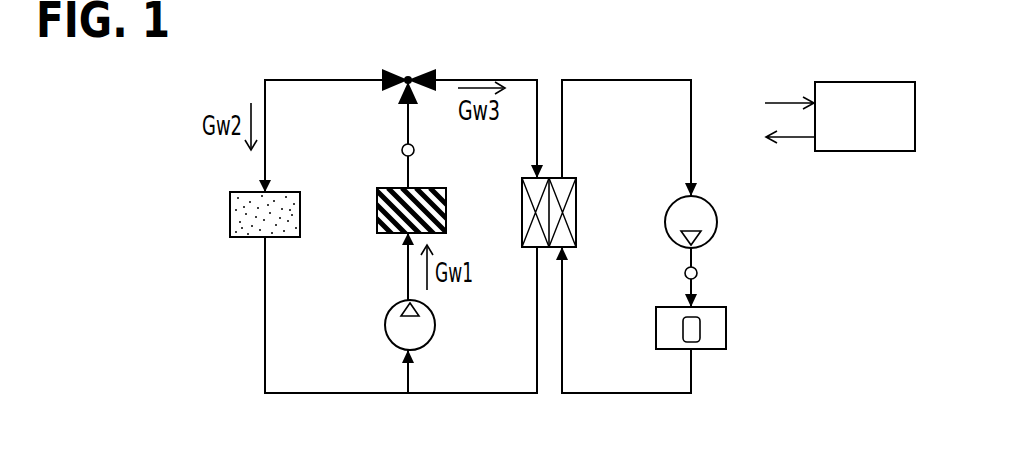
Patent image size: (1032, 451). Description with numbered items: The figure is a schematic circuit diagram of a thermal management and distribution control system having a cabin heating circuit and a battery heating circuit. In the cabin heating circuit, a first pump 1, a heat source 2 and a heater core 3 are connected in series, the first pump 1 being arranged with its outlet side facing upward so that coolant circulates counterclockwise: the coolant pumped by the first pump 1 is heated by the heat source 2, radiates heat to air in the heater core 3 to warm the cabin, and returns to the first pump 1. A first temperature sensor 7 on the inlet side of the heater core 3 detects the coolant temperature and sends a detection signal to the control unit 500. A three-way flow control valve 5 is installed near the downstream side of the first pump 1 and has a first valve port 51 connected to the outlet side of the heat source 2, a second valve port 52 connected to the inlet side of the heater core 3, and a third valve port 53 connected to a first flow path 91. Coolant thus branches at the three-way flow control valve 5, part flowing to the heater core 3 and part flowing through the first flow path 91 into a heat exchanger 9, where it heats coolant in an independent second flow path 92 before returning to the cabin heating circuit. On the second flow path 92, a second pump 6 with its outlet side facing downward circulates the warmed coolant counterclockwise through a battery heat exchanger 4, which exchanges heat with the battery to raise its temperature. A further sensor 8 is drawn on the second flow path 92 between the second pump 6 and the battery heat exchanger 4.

The first pump 1 is at (385, 317).
The heat source 2 is at (377, 200).
The heater core 3 is at (230, 212).
The battery heat exchanger 4 is at (727, 320).
The three-way flow control valve 5 is at (423, 76).
The first valve port 51 is at (403, 103).
The second valve port 52 is at (382, 72).
The third valve port 53 is at (432, 70).
The second pump 6 is at (713, 207).
The first temperature sensor 7 is at (415, 148).
The second temperature sensor 8 is at (700, 270).
The heat exchanger 9 is at (556, 225).
The first flow path 91 is at (535, 278).
The second flow path 92 is at (565, 278).
The control unit 500 is at (887, 130).